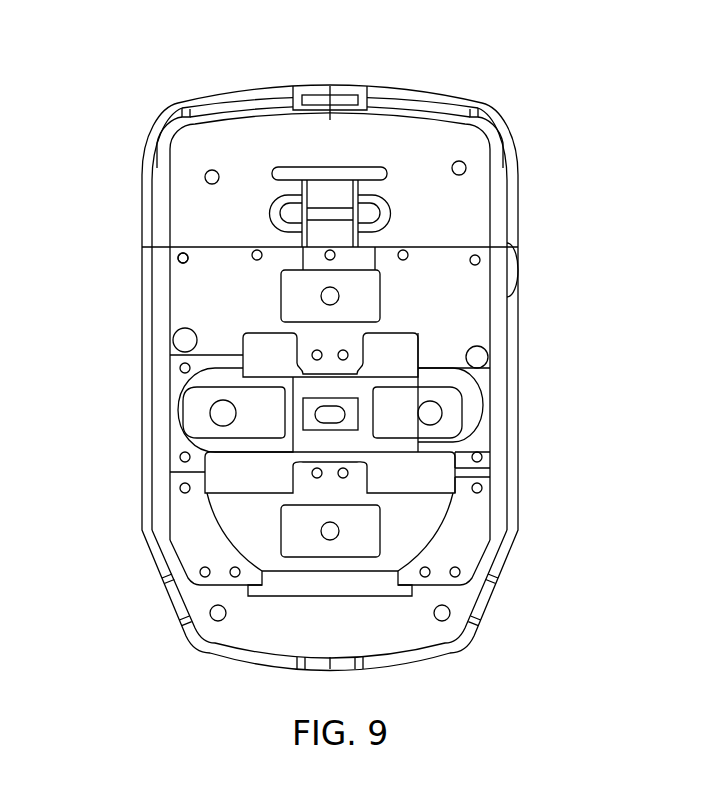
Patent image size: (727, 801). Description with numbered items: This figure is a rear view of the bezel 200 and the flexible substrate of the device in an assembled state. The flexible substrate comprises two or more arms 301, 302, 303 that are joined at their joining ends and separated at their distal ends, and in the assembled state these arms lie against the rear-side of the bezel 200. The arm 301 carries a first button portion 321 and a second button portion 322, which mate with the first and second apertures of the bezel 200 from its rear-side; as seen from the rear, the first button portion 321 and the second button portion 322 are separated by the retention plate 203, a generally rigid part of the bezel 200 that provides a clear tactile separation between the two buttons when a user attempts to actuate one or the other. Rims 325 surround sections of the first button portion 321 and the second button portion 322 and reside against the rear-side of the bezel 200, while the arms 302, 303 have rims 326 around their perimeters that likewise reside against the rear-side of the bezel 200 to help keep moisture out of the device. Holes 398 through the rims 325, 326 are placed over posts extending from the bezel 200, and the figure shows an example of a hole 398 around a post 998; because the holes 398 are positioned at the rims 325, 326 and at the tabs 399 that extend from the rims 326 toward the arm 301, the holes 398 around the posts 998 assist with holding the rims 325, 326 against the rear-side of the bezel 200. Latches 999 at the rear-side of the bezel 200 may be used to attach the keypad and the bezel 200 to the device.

The bezel 200 is at (146, 160).
The latches 999 is at (243, 100).
The arm 302 is at (180, 316).
The rims 326 is at (461, 258).
The holes 398 is at (186, 256).
The post 998 is at (185, 262).
The rims 325 is at (175, 356).
The arm 301 is at (180, 390).
The first button portion 321 is at (198, 428).
The second button portion 322 is at (463, 413).
The retention plate 203 is at (316, 412).
The arm 303 is at (185, 547).
The tabs 399 is at (352, 353).